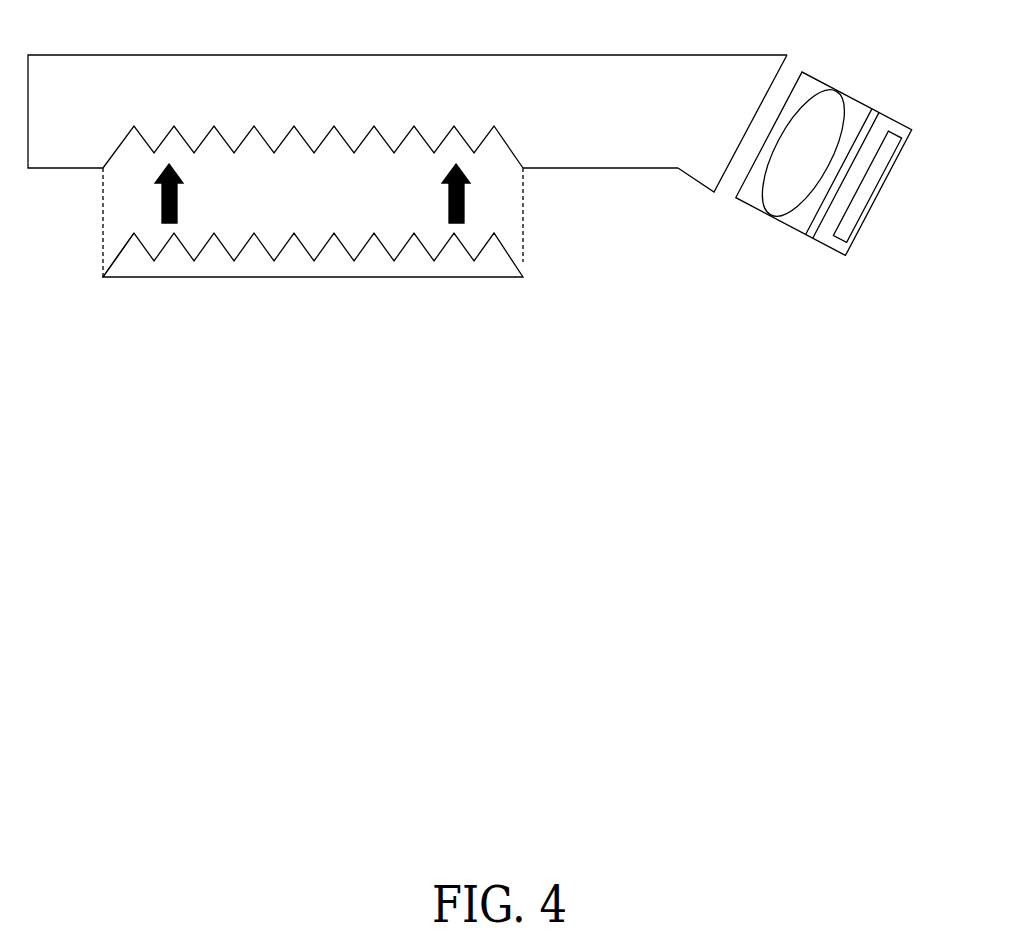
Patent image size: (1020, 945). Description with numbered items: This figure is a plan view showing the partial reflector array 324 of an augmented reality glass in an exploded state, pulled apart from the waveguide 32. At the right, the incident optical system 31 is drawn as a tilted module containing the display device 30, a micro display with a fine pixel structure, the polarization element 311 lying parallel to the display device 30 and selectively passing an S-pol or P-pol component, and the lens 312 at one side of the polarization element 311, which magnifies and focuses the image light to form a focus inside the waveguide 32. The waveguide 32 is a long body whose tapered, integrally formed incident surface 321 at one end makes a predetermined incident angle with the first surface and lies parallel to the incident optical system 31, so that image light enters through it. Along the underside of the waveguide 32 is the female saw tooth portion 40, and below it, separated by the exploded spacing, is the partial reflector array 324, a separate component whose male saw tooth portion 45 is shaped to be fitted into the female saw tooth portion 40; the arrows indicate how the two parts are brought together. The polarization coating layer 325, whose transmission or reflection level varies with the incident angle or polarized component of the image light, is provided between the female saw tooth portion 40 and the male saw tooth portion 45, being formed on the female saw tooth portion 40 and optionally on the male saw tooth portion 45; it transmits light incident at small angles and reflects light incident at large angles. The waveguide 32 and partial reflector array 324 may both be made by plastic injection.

The display device 30 is at (867, 186).
The incident optical system 31 is at (824, 163).
The polarization element 311 is at (842, 173).
The lens 312 is at (803, 153).
The waveguide 32 is at (607, 78).
The incident surface 321 is at (716, 194).
The partial reflector array 324 is at (368, 279).
The polarization coating layer 325 is at (127, 243).
The female saw tooth portion 40 is at (380, 133).
The male saw tooth portion 45 is at (502, 246).